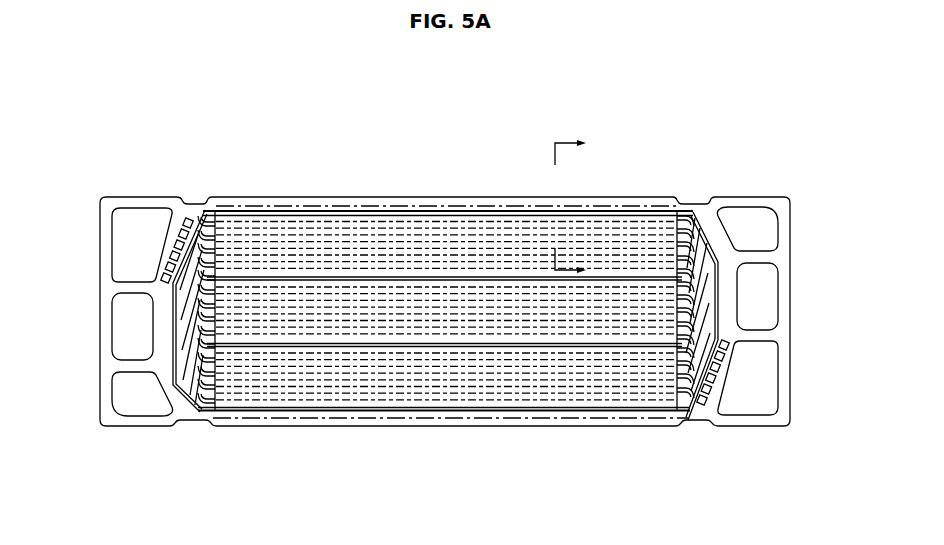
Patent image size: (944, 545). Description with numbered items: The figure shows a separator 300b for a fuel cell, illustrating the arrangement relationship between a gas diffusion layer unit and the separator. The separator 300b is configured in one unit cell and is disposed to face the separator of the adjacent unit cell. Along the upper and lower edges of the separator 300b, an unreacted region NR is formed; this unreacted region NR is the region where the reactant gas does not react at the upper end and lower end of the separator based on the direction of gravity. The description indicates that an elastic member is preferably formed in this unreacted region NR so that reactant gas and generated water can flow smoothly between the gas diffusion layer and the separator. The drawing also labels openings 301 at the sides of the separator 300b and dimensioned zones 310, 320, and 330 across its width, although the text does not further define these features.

The separator 300b is at (788, 186).
The through hole 301 is at (125, 243).
The cell stacking region 310 is at (198, 465).
The electrode lead bending region 320 is at (198, 412).
The end region 330 is at (100, 428).
The unreacted region NR is at (360, 207).